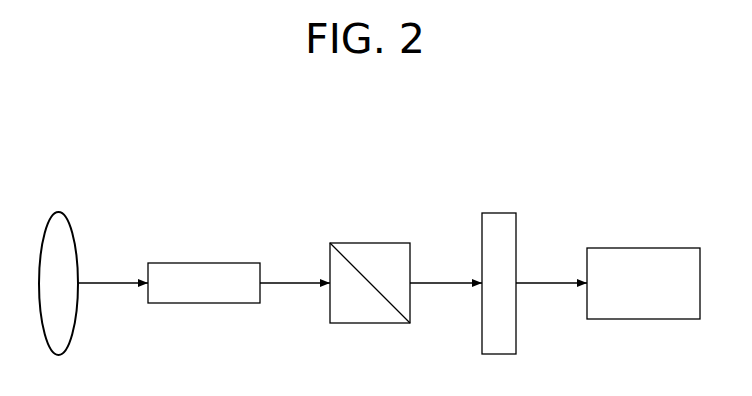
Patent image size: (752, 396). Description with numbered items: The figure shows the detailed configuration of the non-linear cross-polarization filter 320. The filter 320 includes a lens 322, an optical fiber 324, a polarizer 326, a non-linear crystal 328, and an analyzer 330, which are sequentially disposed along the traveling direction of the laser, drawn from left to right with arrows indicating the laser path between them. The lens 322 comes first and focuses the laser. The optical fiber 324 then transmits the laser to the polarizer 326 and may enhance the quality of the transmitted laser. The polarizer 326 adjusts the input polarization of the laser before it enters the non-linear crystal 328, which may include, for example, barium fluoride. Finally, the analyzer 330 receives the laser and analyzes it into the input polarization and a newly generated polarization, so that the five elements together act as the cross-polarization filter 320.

The non-linear cross-polarization filter 320 is at (687, 117).
The lens 322 is at (58, 212).
The optical fiber 324 is at (203, 263).
The polarizer 326 is at (370, 243).
The non-linear crystal 328 is at (500, 213).
The analyzer 330 is at (643, 248).